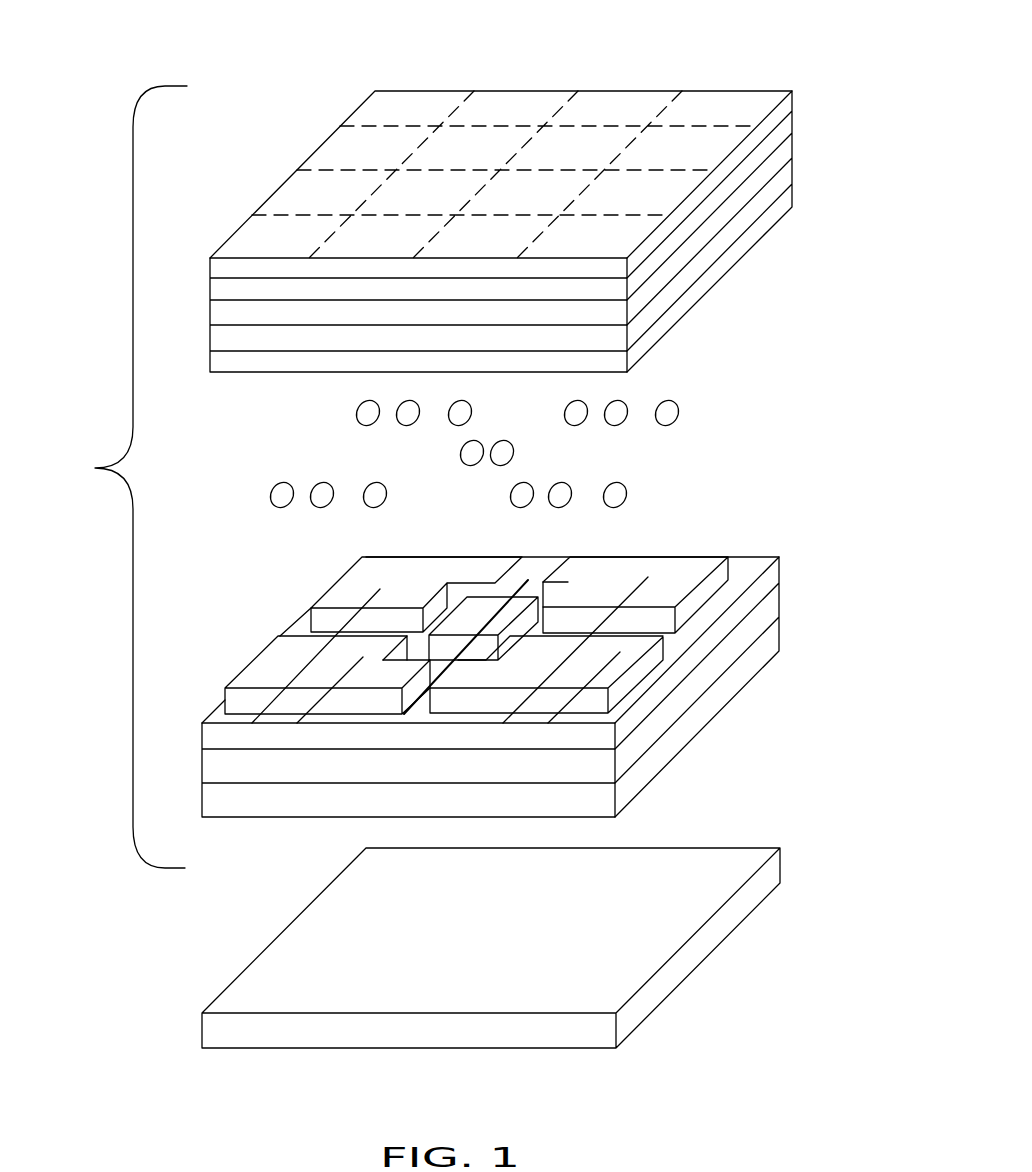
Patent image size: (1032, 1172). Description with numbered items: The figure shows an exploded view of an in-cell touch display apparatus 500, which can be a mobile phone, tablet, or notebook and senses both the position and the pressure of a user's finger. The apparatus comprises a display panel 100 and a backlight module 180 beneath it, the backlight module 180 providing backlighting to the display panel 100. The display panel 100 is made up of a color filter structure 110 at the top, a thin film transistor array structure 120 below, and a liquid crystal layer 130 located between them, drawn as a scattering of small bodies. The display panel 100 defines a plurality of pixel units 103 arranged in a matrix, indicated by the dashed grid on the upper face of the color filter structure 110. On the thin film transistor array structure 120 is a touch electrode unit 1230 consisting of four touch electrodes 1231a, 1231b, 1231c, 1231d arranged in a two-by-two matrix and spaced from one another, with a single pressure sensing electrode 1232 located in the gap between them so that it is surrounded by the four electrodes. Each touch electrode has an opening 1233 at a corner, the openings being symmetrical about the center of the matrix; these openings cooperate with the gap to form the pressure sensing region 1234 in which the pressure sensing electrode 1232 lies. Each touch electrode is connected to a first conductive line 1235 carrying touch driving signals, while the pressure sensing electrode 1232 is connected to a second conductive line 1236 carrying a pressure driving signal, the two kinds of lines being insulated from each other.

The in-cell touch display apparatus 500 is at (535, 58).
The display panel 100 is at (95, 468).
The color filter structure 110 is at (808, 145).
The pixel units 103 is at (725, 105).
The liquid crystal layer 130 is at (712, 438).
The thin film transistor (TFT) array structure 120 is at (790, 612).
The touch electrode unit 1230 is at (713, 538).
The touch electrode 1231a is at (263, 665).
The touch electrode 1231b is at (367, 565).
The touch electrode 1231c is at (627, 647).
The touch electrode 1231d is at (687, 573).
The pressure sensing electrode 1232 is at (480, 608).
The opening 1233 is at (550, 597).
The pressure sensing region 1234 is at (407, 640).
The first conductive line 1235 is at (240, 722).
The second conductive line 1236 is at (403, 715).
The backlight module 180 is at (758, 890).